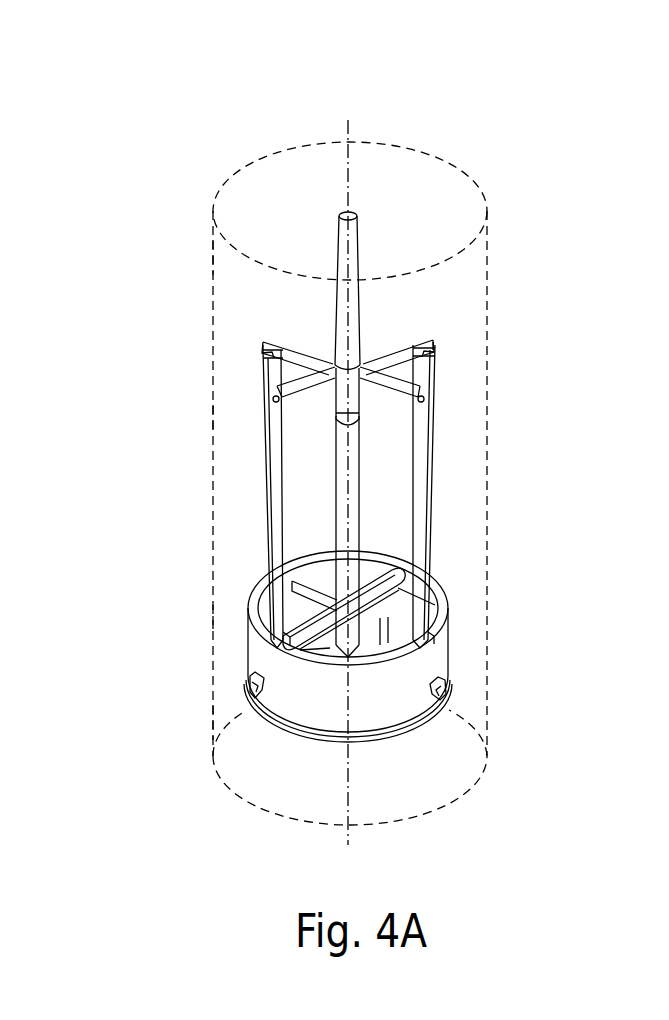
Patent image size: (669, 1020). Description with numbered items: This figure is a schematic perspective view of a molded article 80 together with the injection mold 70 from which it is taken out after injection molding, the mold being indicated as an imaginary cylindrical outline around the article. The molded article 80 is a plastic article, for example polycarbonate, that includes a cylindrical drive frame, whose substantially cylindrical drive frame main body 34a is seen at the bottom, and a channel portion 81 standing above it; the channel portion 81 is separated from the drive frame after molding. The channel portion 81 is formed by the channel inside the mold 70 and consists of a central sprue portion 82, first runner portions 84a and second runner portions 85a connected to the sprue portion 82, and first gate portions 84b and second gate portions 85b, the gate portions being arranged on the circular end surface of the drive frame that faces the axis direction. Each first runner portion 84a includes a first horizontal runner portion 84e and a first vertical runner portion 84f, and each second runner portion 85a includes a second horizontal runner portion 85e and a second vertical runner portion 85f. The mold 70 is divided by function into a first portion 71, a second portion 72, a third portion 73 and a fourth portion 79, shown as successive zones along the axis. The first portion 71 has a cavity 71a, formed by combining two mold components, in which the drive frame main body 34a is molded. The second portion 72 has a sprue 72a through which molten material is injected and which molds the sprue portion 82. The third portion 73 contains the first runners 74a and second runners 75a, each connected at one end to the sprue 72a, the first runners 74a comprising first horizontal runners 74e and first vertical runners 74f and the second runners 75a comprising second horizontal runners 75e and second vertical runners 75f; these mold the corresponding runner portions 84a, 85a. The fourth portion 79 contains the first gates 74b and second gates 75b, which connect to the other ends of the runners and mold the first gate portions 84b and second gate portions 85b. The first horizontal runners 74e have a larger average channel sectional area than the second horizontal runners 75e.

The injection mold 70 is at (505, 217).
The second portion 72 is at (213, 258).
The third portion 73 is at (200, 420).
The fourth portion 79 is at (203, 620).
The first portion 71 is at (203, 720).
The sprue portion 82 is at (333, 212).
The sprue 72a is at (236, 392).
The molded article 80 is at (330, 378).
The first horizontal runner portion 84e is at (300, 340).
The first horizontal runner 74e is at (316, 254).
The first vertical runner portion 84f is at (515, 345).
The first vertical runner 74f is at (324, 365).
The first runner portion 84a is at (257, 332).
The first runner 74a is at (369, 456).
The channel portion 81 is at (321, 525).
The second runner portion 85a is at (508, 513).
The second runner 75a is at (349, 492).
The second horizontal runner portion 85e is at (280, 403).
The second horizontal runner 75e is at (321, 420).
The second vertical runner portion 85f is at (280, 552).
The second vertical runner 75f is at (321, 495).
The second gate portion 85b is at (272, 638).
The second gate 75b is at (348, 668).
The drive frame main body 34a is at (373, 715).
The cavity 71a is at (409, 714).
The first gate portion 84b is at (333, 657).
The first gate 74b is at (287, 697).